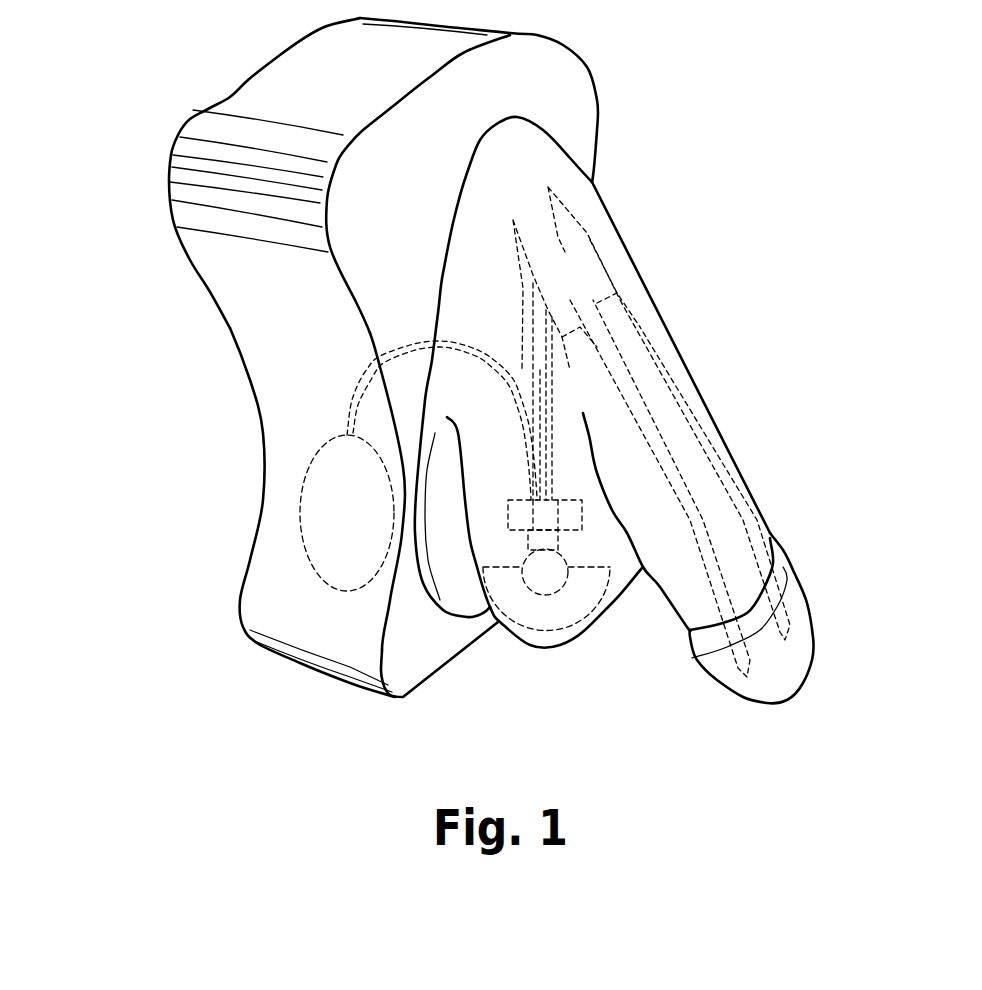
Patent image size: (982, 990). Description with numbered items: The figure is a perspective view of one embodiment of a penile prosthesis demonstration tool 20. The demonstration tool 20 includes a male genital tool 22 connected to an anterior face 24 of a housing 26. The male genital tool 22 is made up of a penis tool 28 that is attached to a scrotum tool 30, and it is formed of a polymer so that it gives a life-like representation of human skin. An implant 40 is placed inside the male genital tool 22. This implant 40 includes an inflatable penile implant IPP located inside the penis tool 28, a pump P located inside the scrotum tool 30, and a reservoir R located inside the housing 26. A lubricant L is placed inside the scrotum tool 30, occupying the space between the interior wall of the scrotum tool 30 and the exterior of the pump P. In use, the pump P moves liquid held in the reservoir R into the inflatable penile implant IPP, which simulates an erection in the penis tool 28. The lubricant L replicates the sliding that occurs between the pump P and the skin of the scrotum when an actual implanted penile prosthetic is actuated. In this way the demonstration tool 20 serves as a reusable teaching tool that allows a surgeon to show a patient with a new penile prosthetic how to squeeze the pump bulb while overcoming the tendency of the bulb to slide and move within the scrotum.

The penile prosthesis demonstration tool 20 is at (126, 168).
The male genital tool 22 is at (722, 331).
The anterior face 24 is at (423, 670).
The housing 26 is at (220, 624).
The penis tool 28 is at (747, 528).
The scrotum tool 30 is at (537, 620).
The implant 40 is at (495, 334).
The inflatable penile implant IPP is at (693, 425).
The reservoir R is at (347, 513).
The pump P is at (545, 572).
The lubricant L is at (575, 612).